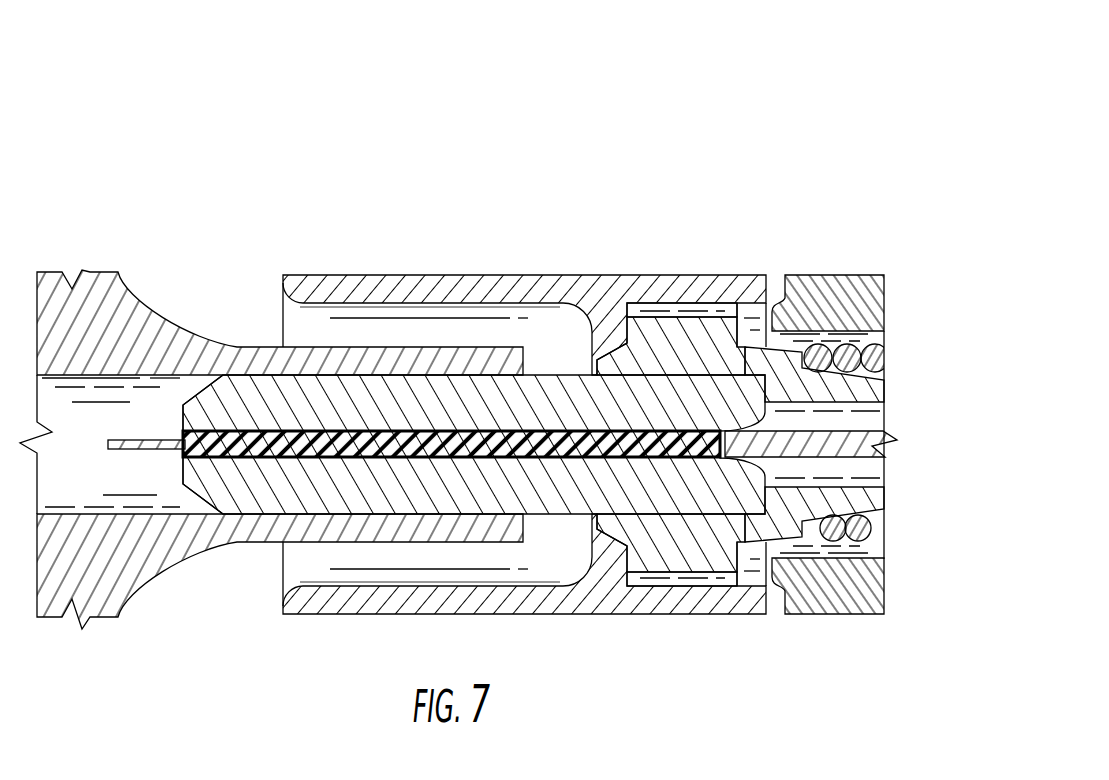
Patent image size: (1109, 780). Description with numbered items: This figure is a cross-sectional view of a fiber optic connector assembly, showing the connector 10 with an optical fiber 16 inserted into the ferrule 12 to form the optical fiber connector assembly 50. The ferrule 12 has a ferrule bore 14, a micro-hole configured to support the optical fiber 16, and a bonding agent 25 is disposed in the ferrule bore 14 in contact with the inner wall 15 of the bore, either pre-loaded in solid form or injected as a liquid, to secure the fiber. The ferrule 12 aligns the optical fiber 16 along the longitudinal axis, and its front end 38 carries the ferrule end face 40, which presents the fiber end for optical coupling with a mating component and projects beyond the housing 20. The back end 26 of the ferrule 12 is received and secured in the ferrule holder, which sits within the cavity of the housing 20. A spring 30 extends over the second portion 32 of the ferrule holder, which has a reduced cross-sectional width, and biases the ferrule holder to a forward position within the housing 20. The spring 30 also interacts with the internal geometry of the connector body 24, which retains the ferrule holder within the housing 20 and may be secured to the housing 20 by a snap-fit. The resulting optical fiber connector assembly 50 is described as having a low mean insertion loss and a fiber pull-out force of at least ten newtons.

The connector 10 is at (836, 66).
The ferrule 12 is at (265, 418).
The ferrule bore 14 is at (365, 462).
The inner wall 15 is at (568, 448).
The optical fiber 16 is at (127, 455).
The housing 20 is at (702, 322).
The connector body 24 is at (859, 275).
The bonding agent 25 is at (478, 436).
The back end 26 is at (769, 397).
The spring 30 is at (862, 530).
The second portion 32 is at (547, 273).
The front end 38 is at (183, 406).
The ferrule end face 40 is at (153, 413).
The optical fiber connector assembly 50 is at (818, 156).